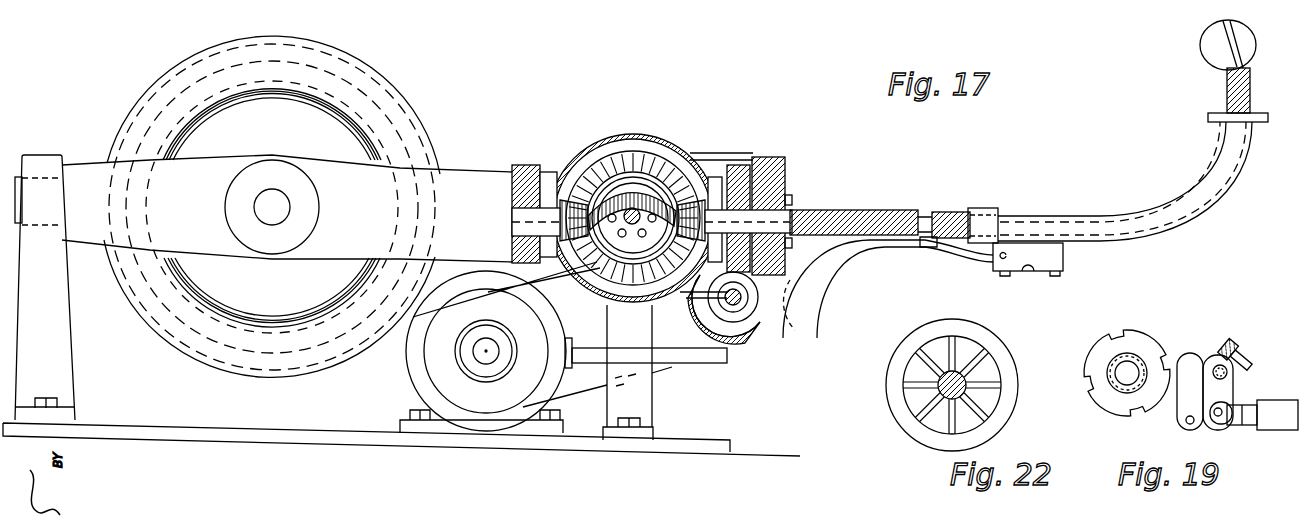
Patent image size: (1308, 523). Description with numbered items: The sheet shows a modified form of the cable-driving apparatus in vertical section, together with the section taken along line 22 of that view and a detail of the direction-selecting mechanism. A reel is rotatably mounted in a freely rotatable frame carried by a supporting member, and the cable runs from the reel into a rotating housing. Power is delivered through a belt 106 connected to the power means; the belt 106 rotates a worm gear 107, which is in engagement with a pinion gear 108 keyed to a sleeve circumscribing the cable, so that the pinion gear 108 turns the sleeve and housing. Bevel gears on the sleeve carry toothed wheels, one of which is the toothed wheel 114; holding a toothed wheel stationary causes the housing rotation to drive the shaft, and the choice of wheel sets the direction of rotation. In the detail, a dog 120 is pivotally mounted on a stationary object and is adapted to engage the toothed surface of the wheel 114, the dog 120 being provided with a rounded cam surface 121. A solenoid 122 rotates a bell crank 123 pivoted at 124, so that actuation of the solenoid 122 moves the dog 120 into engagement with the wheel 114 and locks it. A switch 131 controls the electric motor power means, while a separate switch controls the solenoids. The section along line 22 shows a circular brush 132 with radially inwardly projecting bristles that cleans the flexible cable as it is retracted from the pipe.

In FIG. 17, the belt 106 is at (676, 382).
In FIG. 17, the worm gear 107 is at (757, 333).
In FIG. 17, the pinion gear 108 is at (756, 158).
In FIG. 17, the switch 131 is at (995, 262).
In FIG. 17, the circular brush 132 is at (1257, 123).
In FIG. 22, the circular brush 132 is at (1008, 405).
In FIG. 17, the section line 22— 22 is at (1305, 99).
In FIG. 19, the toothed wheel 114 is at (1143, 343).
In FIG. 19, the dog 120 is at (1193, 353).
In FIG. 19, the rounded cam surface 121 is at (1207, 424).
In FIG. 19, the solenoid 122 is at (1270, 402).
In FIG. 19, the bell crank 123 is at (1230, 387).
In FIG. 19, the pivot 124 is at (1240, 357).